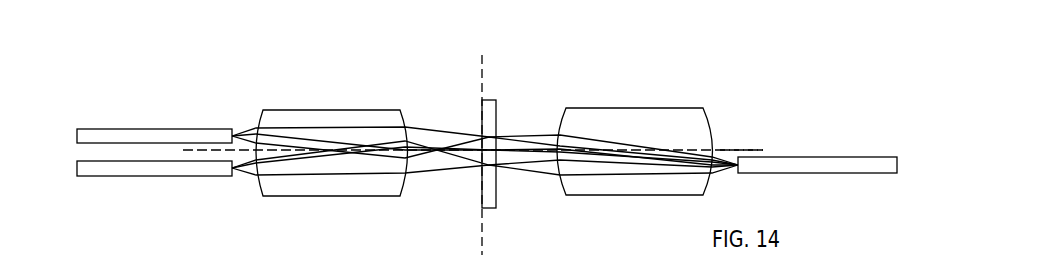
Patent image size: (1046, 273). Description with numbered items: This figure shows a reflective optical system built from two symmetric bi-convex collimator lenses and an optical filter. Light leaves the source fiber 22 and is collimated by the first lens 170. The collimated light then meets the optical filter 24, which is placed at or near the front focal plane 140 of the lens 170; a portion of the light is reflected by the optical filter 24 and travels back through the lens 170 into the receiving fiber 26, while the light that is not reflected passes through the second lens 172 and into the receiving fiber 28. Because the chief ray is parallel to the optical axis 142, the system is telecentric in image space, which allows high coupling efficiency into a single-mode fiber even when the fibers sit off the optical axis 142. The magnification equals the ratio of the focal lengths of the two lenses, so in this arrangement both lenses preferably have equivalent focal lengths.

The source fiber 22 is at (120, 132).
The receiving fiber 26 is at (117, 176).
The lens 170 is at (303, 118).
The optical filter 24 is at (500, 192).
The front focal plane 140 is at (483, 70).
The second lens 172 is at (605, 114).
The optical axis 142 is at (724, 147).
The receiving fiber 28 is at (815, 163).